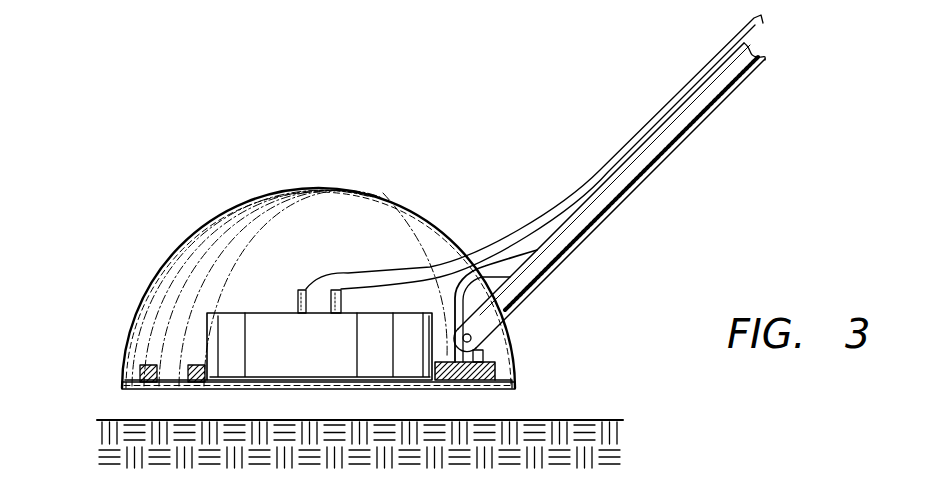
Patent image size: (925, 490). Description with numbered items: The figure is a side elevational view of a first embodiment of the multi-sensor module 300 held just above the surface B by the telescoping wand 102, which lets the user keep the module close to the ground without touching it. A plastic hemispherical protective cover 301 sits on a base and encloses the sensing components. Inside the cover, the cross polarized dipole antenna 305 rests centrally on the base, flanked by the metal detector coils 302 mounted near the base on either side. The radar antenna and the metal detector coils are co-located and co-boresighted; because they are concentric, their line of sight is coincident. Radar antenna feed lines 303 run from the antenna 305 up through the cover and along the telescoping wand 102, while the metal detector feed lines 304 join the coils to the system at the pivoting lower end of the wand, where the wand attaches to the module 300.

The multi-sensor module 300 is at (222, 120).
The plastic hemispherical protective cover 301 is at (202, 225).
The metal detector coils 302 is at (191, 363).
The radar antenna feed lines 303 is at (567, 197).
The metal detector feed lines 304 is at (498, 267).
The cross polarized dipole antenna 305 is at (347, 352).
The telescoping wand 102 is at (680, 140).
The surface B is at (613, 420).